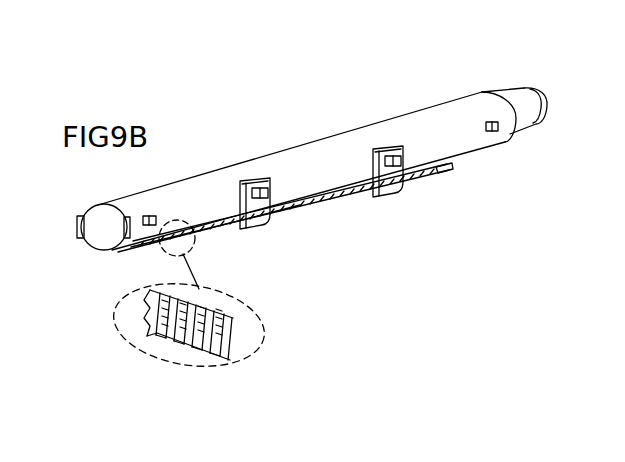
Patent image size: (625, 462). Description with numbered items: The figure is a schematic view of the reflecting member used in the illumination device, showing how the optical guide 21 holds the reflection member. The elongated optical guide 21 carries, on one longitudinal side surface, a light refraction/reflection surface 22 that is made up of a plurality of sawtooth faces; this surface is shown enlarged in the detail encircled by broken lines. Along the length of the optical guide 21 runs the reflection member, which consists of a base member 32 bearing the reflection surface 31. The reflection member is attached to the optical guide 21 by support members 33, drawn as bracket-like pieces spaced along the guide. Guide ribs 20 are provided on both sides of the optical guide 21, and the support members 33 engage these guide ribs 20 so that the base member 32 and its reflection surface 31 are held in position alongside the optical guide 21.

The guide ribs 20 is at (487, 125).
The optical guide 21 is at (479, 91).
The light refraction/reflection surface 22 is at (178, 344).
The reflection surface 31 is at (440, 169).
The base member 32 is at (216, 233).
The support member 33 is at (264, 227).